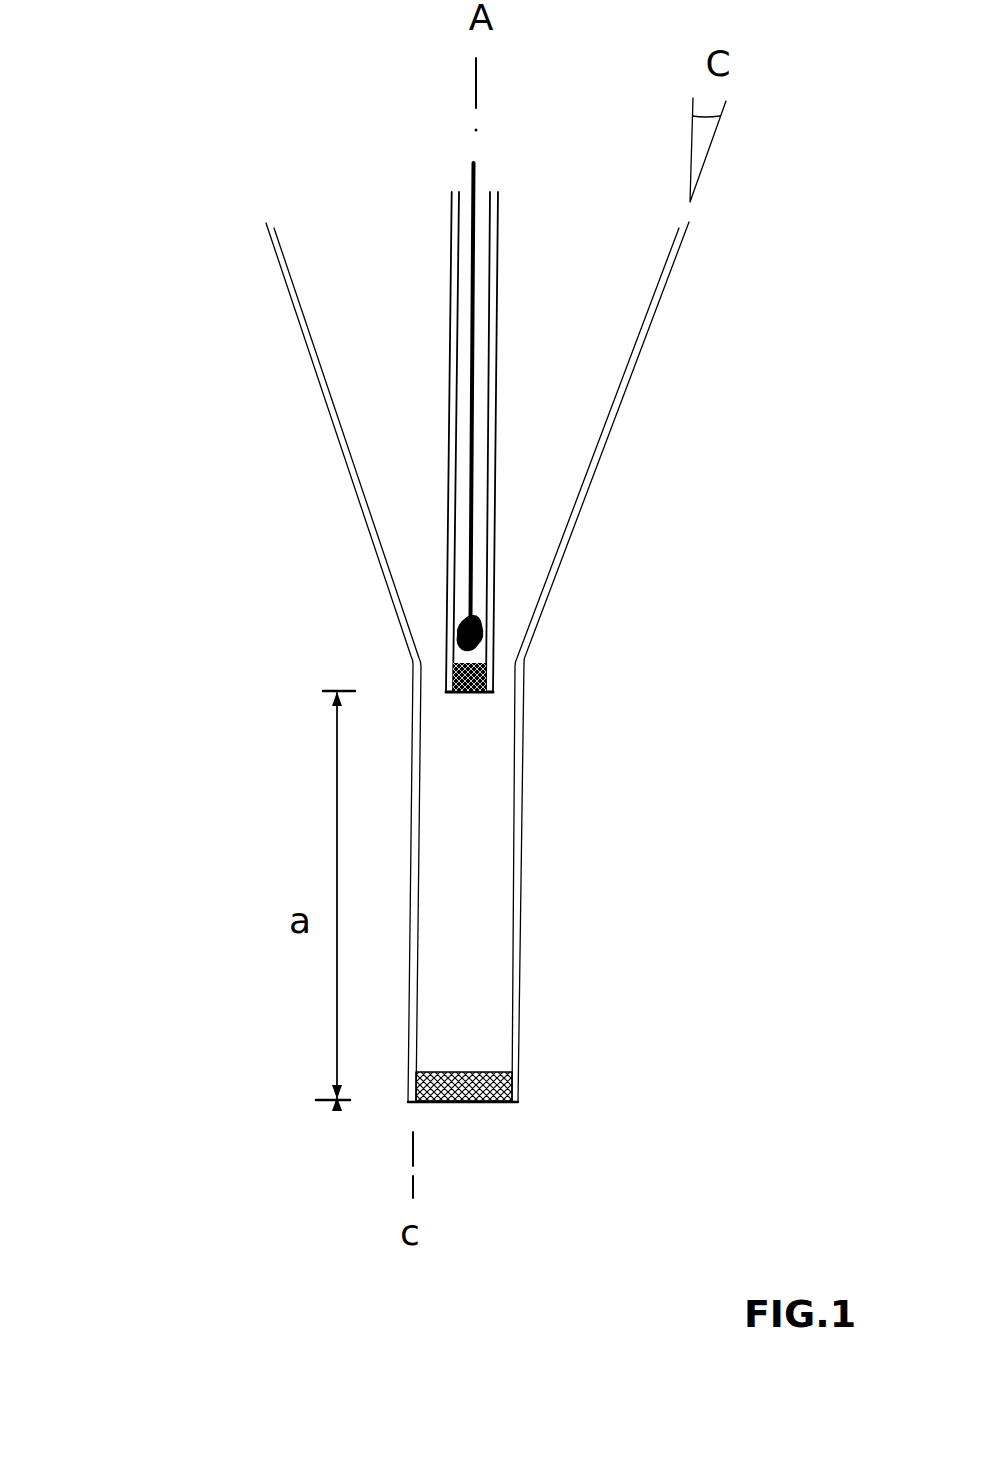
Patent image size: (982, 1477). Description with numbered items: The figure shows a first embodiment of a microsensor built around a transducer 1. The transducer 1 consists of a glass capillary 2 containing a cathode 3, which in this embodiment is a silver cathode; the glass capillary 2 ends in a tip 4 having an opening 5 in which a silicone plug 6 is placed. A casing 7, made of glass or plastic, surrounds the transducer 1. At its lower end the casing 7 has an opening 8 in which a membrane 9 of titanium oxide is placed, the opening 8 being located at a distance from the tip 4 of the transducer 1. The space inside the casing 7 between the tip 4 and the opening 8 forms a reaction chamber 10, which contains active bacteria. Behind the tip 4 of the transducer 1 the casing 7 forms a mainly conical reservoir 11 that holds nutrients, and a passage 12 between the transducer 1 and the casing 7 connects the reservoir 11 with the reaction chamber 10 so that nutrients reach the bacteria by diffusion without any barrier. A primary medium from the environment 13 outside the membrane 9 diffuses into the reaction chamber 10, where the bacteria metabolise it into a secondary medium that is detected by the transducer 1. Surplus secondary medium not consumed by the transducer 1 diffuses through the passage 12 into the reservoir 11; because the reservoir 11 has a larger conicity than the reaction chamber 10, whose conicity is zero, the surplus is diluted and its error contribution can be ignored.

The transducer 1 is at (512, 455).
The glass capillary 2 is at (490, 478).
The cathode 3 is at (473, 510).
The tip 4 is at (488, 675).
The opening 5 is at (485, 700).
The cavity 6 is at (470, 693).
The casing 7 is at (327, 442).
The opening 8 is at (493, 1112).
The membrane 9 is at (463, 1102).
The reaction chamber 10 is at (445, 883).
The reservoir 11 is at (372, 360).
The passage 12 is at (435, 675).
The environment 13 is at (327, 1310).